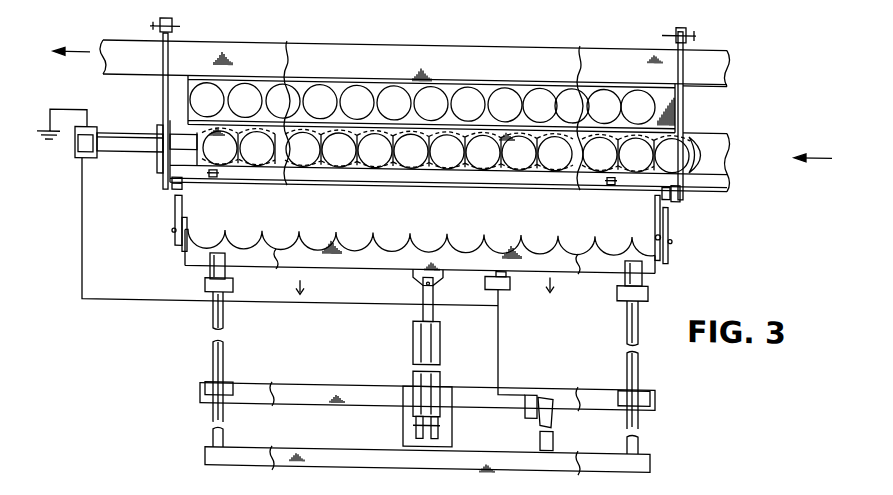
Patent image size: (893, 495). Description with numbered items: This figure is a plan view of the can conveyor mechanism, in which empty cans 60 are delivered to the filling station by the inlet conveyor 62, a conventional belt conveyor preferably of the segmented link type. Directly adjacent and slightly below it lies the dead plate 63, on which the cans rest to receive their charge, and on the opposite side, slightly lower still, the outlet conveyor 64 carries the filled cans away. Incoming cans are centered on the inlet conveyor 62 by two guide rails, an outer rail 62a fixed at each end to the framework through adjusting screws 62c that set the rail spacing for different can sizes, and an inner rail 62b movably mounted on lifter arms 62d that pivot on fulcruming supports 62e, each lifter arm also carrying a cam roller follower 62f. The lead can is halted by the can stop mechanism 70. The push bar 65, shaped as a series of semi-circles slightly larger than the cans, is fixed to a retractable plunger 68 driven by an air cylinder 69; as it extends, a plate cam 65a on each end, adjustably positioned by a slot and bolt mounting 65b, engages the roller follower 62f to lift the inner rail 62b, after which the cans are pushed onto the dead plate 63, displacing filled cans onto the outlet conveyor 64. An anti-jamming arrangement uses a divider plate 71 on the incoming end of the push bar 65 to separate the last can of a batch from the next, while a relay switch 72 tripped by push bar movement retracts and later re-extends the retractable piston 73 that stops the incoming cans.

The cans 60 is at (390, 92).
The inlet conveyor 62 is at (760, 125).
The outer rail 62a is at (650, 166).
The inner rail 62b is at (707, 145).
The adjusting screws 62c is at (214, 177).
The lifter arms 62d is at (163, 91).
The fulcruming supports 62e is at (180, 23).
The cam roller follower 62f is at (172, 187).
The dead plate 63 is at (670, 87).
The outlet conveyor 64 is at (540, 70).
The push bar 65 is at (420, 244).
The plate cam 65a is at (173, 217).
The slot and bolt mounting 65b is at (661, 229).
The retractable plunger 68 is at (425, 304).
The air cylinder 69 is at (420, 338).
The can stop mechanism 70 is at (122, 140).
The divider plate 71 is at (656, 204).
The relay switch 72 is at (533, 388).
The retractable piston 73 is at (196, 148).